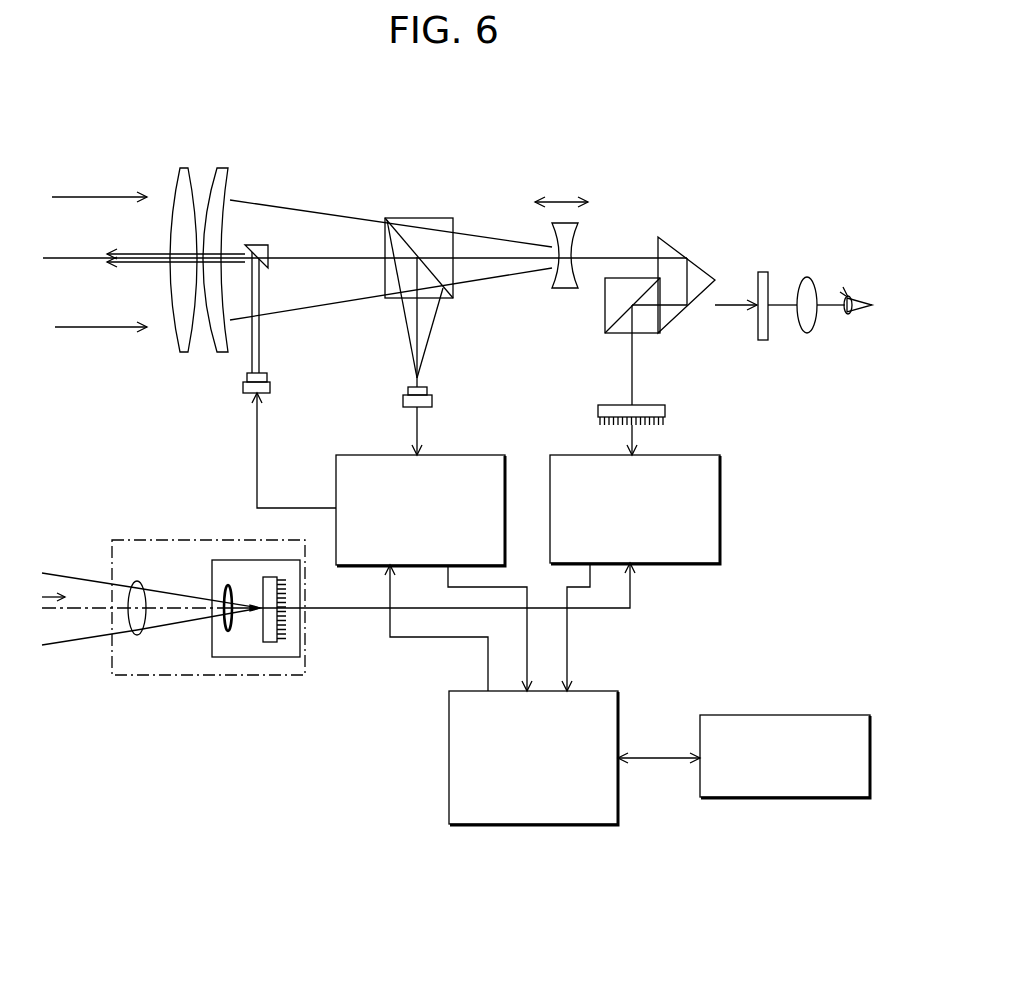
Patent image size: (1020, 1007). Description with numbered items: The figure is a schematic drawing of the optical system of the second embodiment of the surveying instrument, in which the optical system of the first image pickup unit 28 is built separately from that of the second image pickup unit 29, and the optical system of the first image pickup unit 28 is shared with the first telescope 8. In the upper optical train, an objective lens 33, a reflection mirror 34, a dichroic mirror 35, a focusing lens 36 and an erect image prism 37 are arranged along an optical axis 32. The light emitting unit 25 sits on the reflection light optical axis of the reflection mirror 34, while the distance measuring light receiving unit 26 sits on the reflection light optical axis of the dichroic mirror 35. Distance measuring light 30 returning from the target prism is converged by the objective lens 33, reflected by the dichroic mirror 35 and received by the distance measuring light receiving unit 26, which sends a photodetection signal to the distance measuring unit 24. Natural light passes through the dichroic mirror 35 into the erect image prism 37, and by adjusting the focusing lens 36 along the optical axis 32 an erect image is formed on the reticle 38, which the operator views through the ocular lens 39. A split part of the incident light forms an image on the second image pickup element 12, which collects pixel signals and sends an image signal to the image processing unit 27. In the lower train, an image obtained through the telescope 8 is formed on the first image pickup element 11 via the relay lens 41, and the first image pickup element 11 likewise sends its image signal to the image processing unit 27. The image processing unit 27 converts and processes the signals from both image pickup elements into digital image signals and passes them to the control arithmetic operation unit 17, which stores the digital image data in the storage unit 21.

The first telescope 8 is at (110, 565).
The first image pickup element 11 is at (272, 642).
The second image pickup element 12 is at (665, 410).
The control arithmetic operation unit 17 is at (449, 728).
The storage unit 21 is at (838, 715).
The distance measuring unit 24 is at (336, 480).
The light emitting unit 25 is at (243, 388).
The distance measuring light receiving unit 26 is at (403, 400).
The image processing unit 27 is at (720, 480).
The first image pickup unit 28 is at (292, 664).
The second image pickup unit 29 is at (726, 397).
The distance measuring light 30 is at (108, 196).
The optical axis 32 is at (637, 252).
The objective lens 33 is at (204, 156).
The reflection mirror 34 is at (253, 245).
The dichroic mirror 35 is at (416, 218).
The focusing lens 36 is at (580, 238).
The erect image prism 37 is at (690, 258).
The reticle 38 is at (768, 277).
The ocular lens 39 is at (809, 279).
The relay lens 41 is at (138, 636).